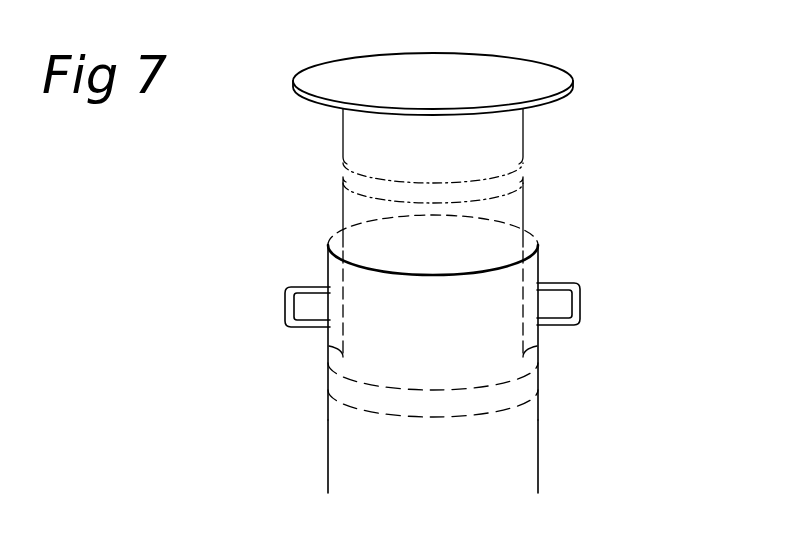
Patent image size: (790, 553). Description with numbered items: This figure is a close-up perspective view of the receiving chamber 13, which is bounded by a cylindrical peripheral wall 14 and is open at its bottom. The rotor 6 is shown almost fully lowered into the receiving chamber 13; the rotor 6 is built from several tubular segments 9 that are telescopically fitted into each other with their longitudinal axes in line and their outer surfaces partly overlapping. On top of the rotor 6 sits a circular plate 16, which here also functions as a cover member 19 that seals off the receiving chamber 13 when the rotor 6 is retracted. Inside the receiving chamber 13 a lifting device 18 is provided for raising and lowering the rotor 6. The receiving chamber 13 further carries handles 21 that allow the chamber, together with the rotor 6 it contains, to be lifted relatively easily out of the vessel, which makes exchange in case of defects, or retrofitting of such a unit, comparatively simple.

The rotor 6 is at (318, 215).
The tubular segments 9 is at (490, 354).
The receiving chamber 13 is at (318, 443).
The cylindrical peripheral wall 14 is at (523, 440).
The circular plate 16 is at (550, 50).
The lifting device 18 is at (507, 392).
The cover member 19 is at (583, 82).
The handles 21 is at (285, 288).